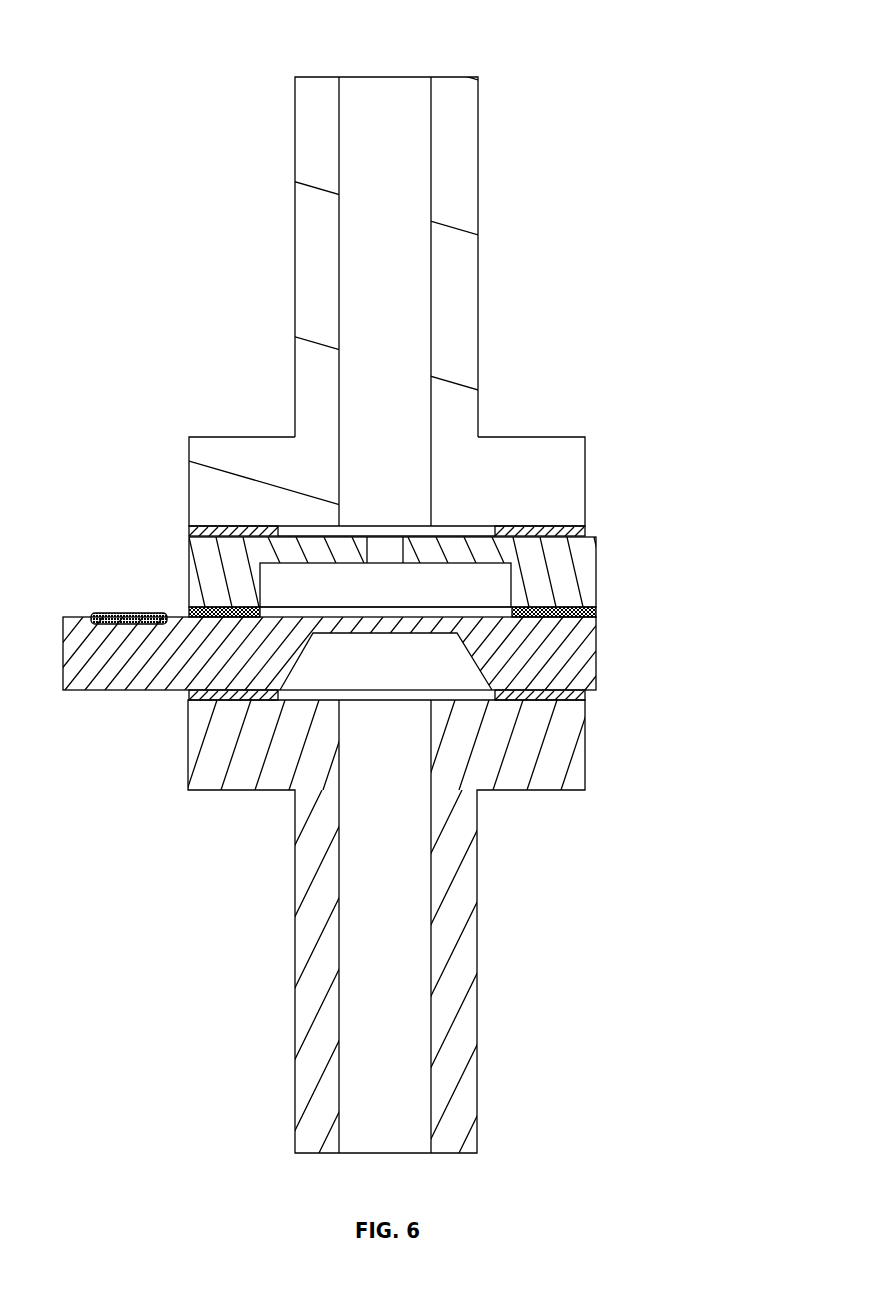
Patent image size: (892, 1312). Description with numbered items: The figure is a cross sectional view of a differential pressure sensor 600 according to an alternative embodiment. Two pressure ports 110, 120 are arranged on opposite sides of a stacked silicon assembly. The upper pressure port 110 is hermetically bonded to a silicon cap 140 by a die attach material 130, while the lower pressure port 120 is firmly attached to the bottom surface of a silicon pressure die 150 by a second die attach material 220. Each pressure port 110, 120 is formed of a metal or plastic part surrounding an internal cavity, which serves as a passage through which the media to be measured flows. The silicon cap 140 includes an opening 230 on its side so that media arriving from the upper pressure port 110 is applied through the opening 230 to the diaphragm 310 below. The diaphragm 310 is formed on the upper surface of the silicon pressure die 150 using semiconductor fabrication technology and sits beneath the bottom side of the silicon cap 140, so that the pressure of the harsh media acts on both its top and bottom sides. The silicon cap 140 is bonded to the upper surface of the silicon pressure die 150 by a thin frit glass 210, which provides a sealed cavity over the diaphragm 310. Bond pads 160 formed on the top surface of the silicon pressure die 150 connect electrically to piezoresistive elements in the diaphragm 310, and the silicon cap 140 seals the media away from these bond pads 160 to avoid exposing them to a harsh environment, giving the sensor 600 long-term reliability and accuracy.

The differential pressure sensor 600 is at (652, 78).
The pressure port 110 is at (478, 148).
The pressure port 120 is at (473, 848).
The die attach material 130 is at (585, 528).
The silicon cap 140 is at (580, 578).
The silicon pressure die 150 is at (596, 658).
The bond pads 160 is at (118, 613).
The frit glass 210 is at (597, 607).
The die attach material 220 is at (583, 698).
The opening 230 is at (380, 543).
The diaphragm 310 is at (385, 637).